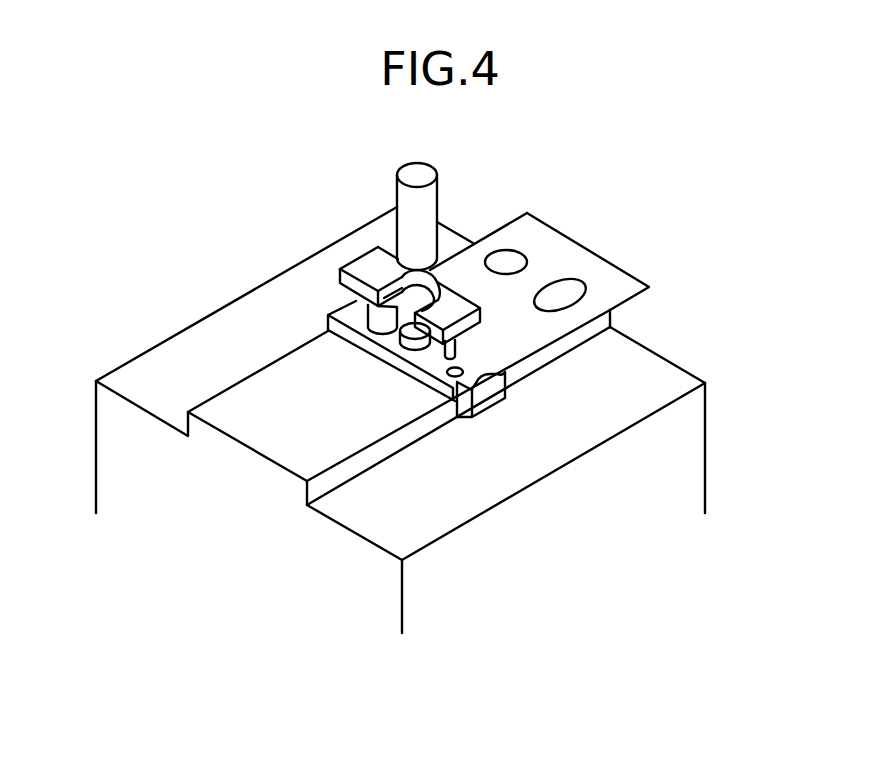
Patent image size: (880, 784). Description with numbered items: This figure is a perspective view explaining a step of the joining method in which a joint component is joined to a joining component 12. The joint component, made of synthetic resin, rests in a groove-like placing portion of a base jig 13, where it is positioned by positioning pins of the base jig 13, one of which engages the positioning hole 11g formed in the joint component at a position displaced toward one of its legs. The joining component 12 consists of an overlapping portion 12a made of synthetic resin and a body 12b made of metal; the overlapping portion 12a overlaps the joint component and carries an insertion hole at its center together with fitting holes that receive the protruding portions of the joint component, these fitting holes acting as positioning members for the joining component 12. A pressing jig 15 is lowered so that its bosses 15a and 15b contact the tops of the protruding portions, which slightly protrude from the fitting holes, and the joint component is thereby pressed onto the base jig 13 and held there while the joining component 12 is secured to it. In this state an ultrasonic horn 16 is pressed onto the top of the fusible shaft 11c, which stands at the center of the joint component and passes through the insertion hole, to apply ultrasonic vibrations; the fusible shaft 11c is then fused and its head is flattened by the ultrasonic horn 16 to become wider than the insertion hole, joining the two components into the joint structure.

The fusible shaft 11c is at (425, 337).
The positioning hole 11g is at (432, 388).
The joining component 12 is at (574, 223).
The overlapping portion 12a is at (478, 368).
The body 12b is at (613, 280).
The base jig 13 is at (230, 333).
The pressing jig 15 is at (348, 251).
The boss 15a is at (366, 313).
The boss 15b is at (458, 339).
The ultrasonic horn 16 is at (400, 190).